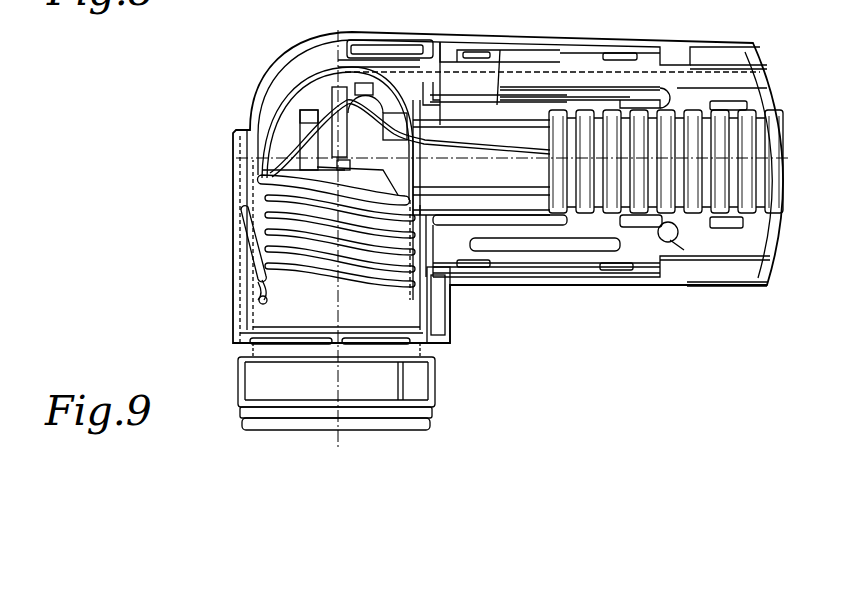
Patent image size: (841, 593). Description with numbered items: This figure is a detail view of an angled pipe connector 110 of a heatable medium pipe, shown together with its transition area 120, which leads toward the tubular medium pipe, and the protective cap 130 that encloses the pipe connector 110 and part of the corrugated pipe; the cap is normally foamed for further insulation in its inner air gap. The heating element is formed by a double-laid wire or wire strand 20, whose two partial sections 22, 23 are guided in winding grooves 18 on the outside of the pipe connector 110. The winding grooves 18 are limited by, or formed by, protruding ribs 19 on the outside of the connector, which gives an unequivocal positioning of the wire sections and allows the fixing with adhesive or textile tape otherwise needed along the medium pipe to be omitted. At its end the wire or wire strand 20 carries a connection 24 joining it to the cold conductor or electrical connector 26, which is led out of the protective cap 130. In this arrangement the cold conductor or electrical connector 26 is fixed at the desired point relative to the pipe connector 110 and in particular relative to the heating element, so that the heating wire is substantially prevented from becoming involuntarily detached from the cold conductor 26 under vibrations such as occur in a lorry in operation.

The pipe connector 110 is at (250, 65).
The protective cap 130 is at (403, 42).
The transition area 120 is at (505, 55).
The connection 24 is at (578, 55).
The cold conductor or electrical connector 26 is at (703, 78).
The partial section 23 is at (247, 160).
The wire or wire strand 20 is at (262, 197).
The protruding ribs 19 is at (262, 218).
The winding grooves 18 is at (262, 242).
The partial section 22 is at (255, 288).